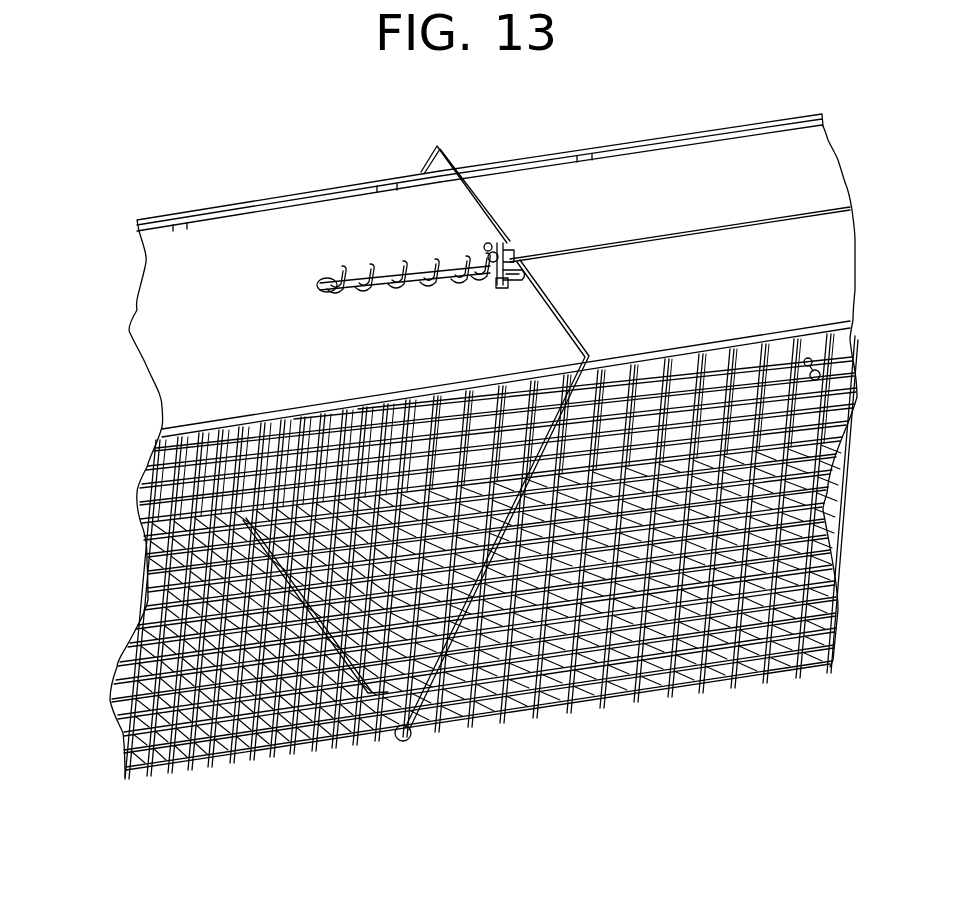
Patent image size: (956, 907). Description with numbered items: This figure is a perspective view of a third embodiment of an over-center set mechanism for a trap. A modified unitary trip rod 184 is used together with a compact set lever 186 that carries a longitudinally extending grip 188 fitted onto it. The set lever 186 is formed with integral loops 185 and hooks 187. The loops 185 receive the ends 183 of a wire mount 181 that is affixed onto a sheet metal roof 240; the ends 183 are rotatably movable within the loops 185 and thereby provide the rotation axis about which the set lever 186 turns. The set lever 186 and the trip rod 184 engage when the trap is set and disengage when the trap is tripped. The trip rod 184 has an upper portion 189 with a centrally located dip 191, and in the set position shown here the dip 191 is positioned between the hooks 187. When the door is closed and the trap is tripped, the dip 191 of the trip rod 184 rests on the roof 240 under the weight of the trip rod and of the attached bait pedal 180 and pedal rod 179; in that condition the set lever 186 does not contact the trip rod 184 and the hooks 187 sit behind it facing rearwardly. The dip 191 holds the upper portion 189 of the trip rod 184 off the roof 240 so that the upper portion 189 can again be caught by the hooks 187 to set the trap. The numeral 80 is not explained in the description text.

The wall panel 80 is at (695, 228).
The sheet metal roof 240 is at (177, 313).
The pedal rod 179 is at (382, 718).
The bait pedal 180 is at (350, 648).
The wire mount 181 is at (510, 287).
The ends of wire mount 183 is at (497, 282).
The unitary trip rod 184 is at (435, 722).
The loops 185 is at (481, 238).
The set lever 186 is at (327, 265).
The hooks 187 is at (508, 243).
The grip 188 is at (390, 262).
The upper portion of trip rod 189 is at (503, 240).
The dip 191 is at (522, 250).